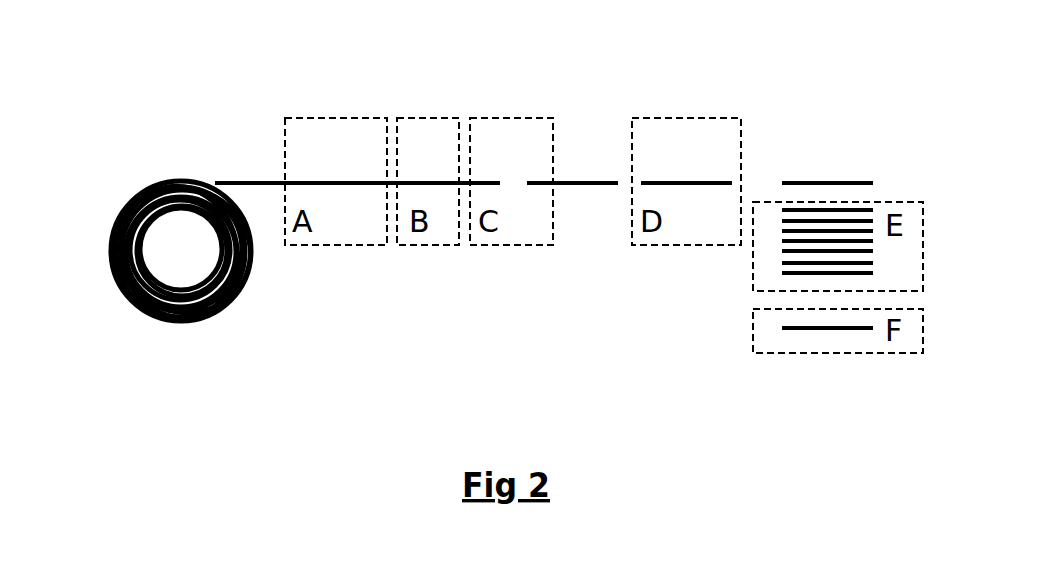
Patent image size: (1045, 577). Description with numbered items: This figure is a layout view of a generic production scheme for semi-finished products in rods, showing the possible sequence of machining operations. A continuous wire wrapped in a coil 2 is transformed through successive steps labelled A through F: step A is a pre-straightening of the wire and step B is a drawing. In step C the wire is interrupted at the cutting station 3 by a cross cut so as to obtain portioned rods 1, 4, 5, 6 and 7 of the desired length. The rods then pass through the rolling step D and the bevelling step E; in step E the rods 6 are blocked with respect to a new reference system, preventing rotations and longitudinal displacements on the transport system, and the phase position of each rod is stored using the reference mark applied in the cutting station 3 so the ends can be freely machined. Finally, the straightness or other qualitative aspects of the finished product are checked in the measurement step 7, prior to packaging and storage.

The portioned rod 1 is at (808, 170).
The coil 2 is at (140, 176).
The cutting station 3 is at (510, 173).
The portioned rod 4 is at (580, 177).
The portioned rod 5 is at (680, 175).
The rods 6 is at (857, 226).
The measurement step 7 is at (822, 334).